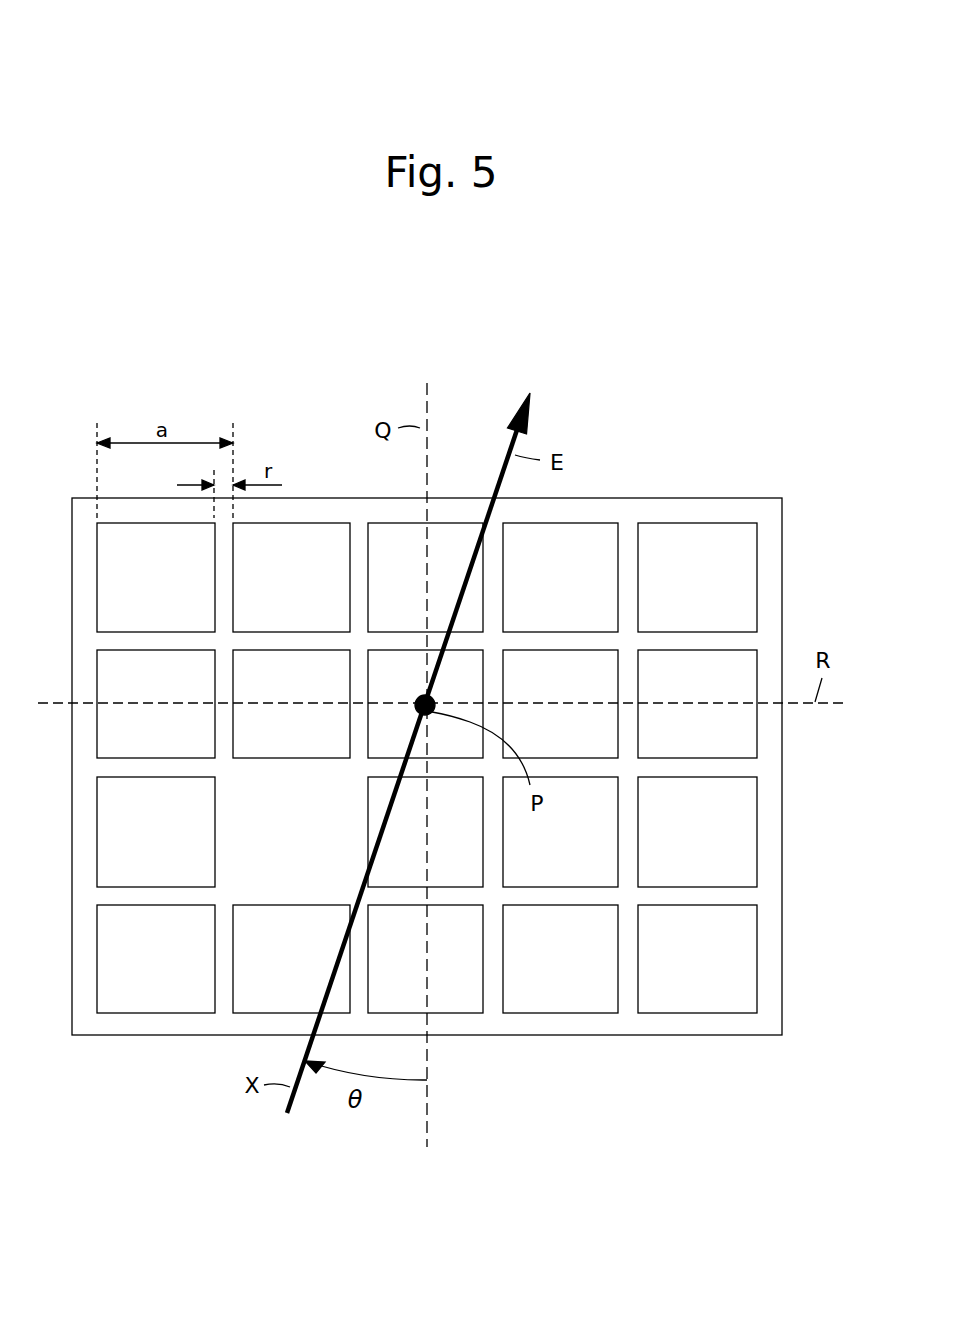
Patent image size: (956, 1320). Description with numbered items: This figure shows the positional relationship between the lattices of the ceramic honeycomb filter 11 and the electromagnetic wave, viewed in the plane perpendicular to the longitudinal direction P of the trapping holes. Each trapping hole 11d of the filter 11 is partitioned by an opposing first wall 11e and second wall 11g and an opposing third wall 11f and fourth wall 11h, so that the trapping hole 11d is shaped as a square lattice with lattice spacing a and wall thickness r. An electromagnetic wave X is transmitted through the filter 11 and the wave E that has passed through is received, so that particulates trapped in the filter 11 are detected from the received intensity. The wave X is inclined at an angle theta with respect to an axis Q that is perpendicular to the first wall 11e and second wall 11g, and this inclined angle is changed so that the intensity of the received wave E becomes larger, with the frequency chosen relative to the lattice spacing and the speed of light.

The filter 11 is at (779, 478).
The trapping hole 11d is at (722, 590).
The first wall 11e is at (292, 777).
The third wall 11f is at (220, 677).
The second wall 11g is at (298, 633).
The fourth wall 11h is at (360, 667).